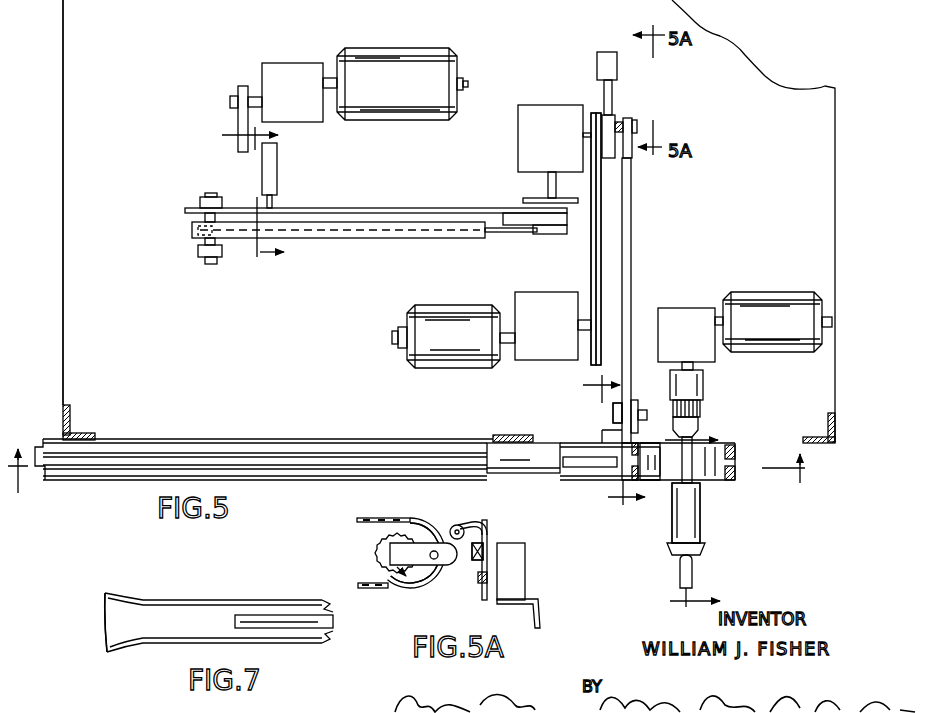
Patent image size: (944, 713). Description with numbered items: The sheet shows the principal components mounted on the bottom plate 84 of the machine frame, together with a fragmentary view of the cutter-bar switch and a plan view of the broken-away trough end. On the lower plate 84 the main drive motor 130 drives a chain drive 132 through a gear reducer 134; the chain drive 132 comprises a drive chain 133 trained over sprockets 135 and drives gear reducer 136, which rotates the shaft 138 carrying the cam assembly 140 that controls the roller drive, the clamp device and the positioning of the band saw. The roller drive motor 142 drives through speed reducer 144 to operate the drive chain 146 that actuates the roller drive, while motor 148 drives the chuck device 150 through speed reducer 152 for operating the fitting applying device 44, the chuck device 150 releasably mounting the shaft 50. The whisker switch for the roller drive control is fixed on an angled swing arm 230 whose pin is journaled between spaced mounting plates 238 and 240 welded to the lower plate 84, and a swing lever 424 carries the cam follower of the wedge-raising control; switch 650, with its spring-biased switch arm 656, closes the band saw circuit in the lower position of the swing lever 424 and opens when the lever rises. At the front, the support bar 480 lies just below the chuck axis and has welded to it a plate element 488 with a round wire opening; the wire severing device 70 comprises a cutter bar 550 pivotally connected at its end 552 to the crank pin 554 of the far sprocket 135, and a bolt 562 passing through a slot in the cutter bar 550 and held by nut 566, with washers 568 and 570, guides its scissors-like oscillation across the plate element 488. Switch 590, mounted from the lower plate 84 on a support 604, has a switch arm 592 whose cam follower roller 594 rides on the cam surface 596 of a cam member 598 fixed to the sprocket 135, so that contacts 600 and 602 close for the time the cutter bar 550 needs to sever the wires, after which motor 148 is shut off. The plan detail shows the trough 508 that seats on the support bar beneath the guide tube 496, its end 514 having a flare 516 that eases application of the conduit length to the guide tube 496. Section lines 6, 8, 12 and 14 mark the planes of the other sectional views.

In FIG. 5, the speed reducer 144 is at (300, 75).
In FIG. 5, the roller drive motor 142 is at (423, 57).
In FIG. 5, the drive chain 146 is at (238, 127).
In FIG. 5, the section line 12 is at (242, 194).
In FIG. 5, the switch 650 is at (272, 172).
In FIG. 5, the switch arm 656 is at (273, 207).
In FIG. 5, the swing lever 424 is at (355, 210).
In FIG. 5, the angled swing arm 230 is at (192, 230).
In FIG. 5, the mounting plate 240 is at (197, 203).
In FIG. 5, the mounting plate 238 is at (198, 255).
In FIG. 5, the gear reducer 136 is at (553, 120).
In FIG. 5, the shaft 138 is at (553, 185).
In FIG. 5, the cam assembly 140 is at (601, 205).
In FIG. 5, the drive chain 133 is at (597, 222).
In FIG. 5A, the drive chain 133 is at (372, 517).
In FIG. 5, the switch 590 is at (605, 52).
In FIG. 5A, the switch 590 is at (520, 553).
In FIG. 5, the crank pin 554 is at (618, 117).
In FIG. 5A, the crank pin 554 is at (417, 572).
In FIG. 5, the end 552 is at (630, 142).
In FIG. 5, the cutter bar 550 is at (627, 255).
In FIG. 5, the gear reducer 134 is at (530, 305).
In FIG. 5, the chain drive 132 is at (589, 260).
In FIG. 5, the main drive motor 130 is at (427, 348).
In FIG. 5, the speed reducer 152 is at (702, 317).
In FIG. 5, the motor 148 is at (772, 307).
In FIG. 5, the chuck device 150 is at (710, 395).
In FIG. 5, the nut 566 is at (676, 410).
In FIG. 5, the washer 568 is at (613, 427).
In FIG. 5, the bolt 562 is at (613, 413).
In FIG. 5, the washer 570 is at (642, 402).
In FIG. 5, the section line 6 is at (606, 442).
In FIG. 5, the wire severing device 70 is at (592, 430).
In FIG. 5, the support bar 480 is at (595, 475).
In FIG. 5, the plate element 488 is at (657, 447).
In FIG. 5, the shaft 50 is at (692, 472).
In FIG. 5, the fitting applying device 44 is at (722, 532).
In FIG. 5, the section line 8 is at (685, 517).
In FIG. 5, the section line 14 is at (411, 482).
In FIG. 5, the bottom plate 84 is at (100, 368).
In FIG. 5A, the cam surface 596 is at (420, 538).
In FIG. 5A, the sprocket 135 is at (407, 532).
In FIG. 5A, the cam member 598 is at (390, 548).
In FIG. 5A, the cam follower roller 594 is at (463, 532).
In FIG. 5A, the switch arm 592 is at (487, 533).
In FIG. 5A, the contact 600 is at (486, 553).
In FIG. 5A, the contact 602 is at (476, 562).
In FIG. 5A, the support 604 is at (541, 616).
In FIG. 7, the end 514 is at (138, 610).
In FIG. 7, the trough 508 is at (273, 600).
In FIG. 7, the guide tube 496 is at (300, 617).
In FIG. 7, the flare 516 is at (93, 652).